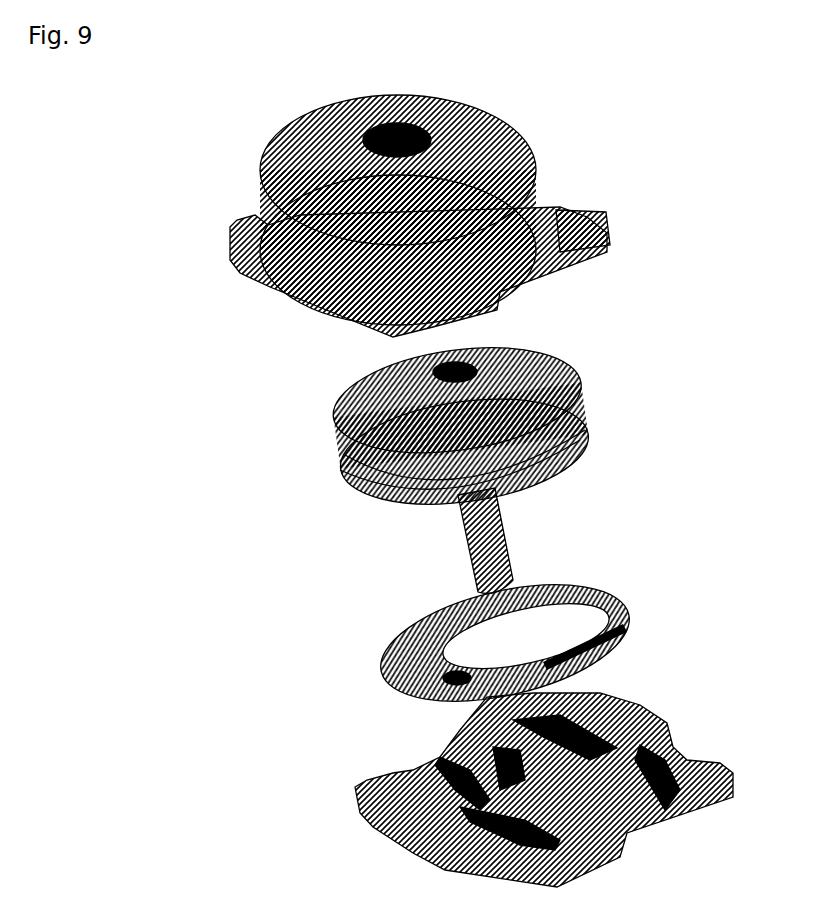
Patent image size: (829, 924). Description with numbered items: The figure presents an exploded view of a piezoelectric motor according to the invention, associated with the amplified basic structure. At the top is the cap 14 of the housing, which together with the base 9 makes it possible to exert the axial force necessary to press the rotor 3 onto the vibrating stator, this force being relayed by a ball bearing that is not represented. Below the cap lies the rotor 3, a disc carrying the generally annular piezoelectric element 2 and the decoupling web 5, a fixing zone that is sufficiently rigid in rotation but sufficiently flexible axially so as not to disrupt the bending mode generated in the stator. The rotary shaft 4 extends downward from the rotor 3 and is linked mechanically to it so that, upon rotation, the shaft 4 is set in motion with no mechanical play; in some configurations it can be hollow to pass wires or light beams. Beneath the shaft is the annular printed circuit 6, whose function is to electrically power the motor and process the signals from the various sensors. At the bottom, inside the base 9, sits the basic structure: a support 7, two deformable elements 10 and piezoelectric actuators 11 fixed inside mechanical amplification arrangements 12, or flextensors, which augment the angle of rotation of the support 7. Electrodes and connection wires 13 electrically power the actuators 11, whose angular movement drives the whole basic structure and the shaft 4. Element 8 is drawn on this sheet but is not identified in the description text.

The cap 14 is at (513, 120).
The base 9 is at (587, 212).
The rotor 3 is at (570, 367).
The decoupling web 5 is at (587, 420).
The piezoelectric element 2 is at (577, 453).
The rotary shaft 4 is at (495, 520).
The printed circuit 6 is at (393, 640).
The mechanical amplification arrangement 12 is at (565, 715).
The support 7 is at (575, 775).
The base housing 8 is at (708, 772).
The deformable element 10 is at (468, 745).
The piezoelectric actuator 11 is at (515, 780).
The connection wires 13 is at (505, 757).